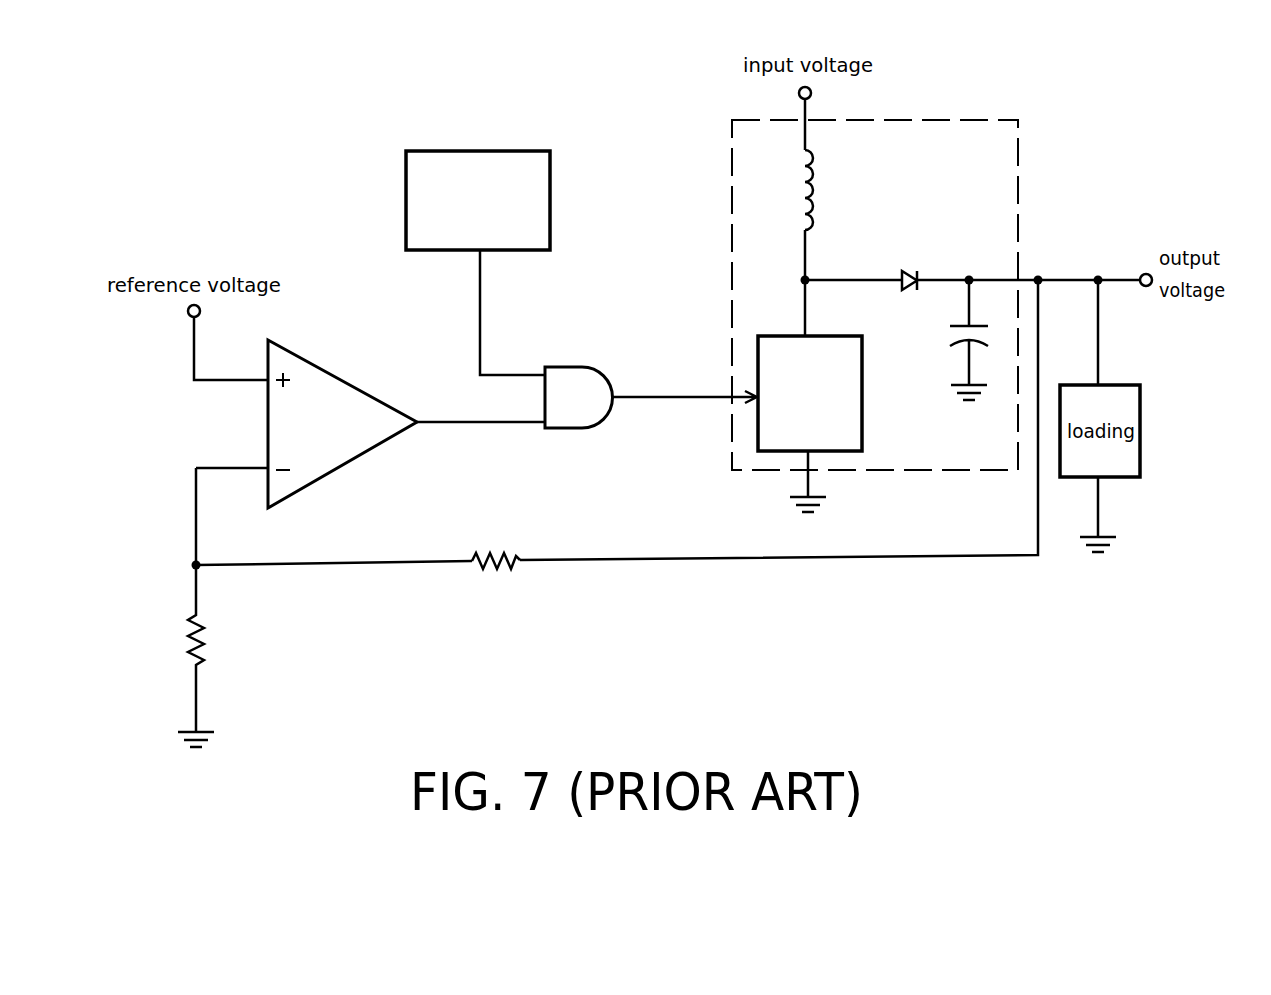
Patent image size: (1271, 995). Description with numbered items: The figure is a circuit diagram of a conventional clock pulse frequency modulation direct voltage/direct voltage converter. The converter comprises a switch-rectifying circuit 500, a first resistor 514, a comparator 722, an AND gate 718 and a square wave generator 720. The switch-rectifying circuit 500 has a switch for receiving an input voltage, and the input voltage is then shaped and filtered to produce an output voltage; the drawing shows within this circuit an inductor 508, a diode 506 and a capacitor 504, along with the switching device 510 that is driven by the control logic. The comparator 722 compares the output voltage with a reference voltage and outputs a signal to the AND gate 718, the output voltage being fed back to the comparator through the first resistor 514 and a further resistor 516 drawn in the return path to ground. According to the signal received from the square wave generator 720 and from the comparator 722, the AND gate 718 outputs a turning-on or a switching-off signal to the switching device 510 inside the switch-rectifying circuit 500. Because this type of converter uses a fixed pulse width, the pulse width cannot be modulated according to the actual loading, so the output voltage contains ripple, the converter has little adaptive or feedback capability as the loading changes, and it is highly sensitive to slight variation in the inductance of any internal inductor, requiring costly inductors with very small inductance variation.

The switch-rectifying circuit 500 is at (1018, 120).
The capacitor 504 is at (983, 298).
The diode 506 is at (902, 270).
The inductor 508 is at (820, 195).
The switching device 510 is at (910, 388).
The first resistor 514 is at (507, 573).
The resistor 516 is at (205, 640).
The AND gate 718 is at (603, 370).
The square wave generator 720 is at (550, 190).
The comparator 722 is at (345, 375).